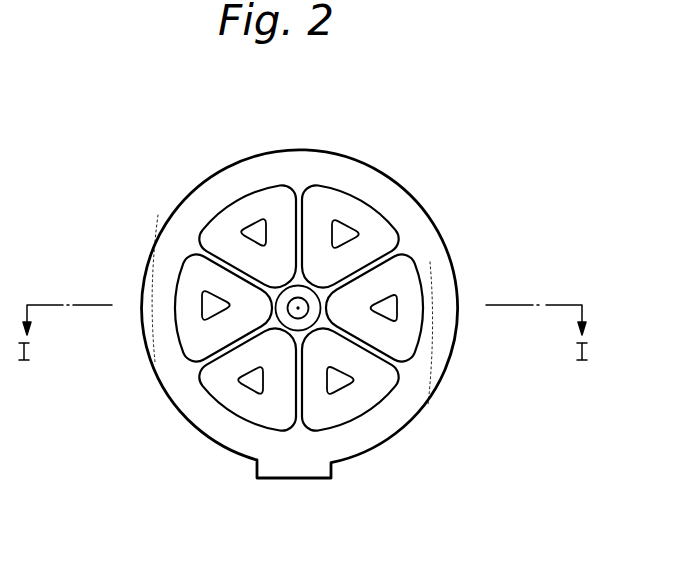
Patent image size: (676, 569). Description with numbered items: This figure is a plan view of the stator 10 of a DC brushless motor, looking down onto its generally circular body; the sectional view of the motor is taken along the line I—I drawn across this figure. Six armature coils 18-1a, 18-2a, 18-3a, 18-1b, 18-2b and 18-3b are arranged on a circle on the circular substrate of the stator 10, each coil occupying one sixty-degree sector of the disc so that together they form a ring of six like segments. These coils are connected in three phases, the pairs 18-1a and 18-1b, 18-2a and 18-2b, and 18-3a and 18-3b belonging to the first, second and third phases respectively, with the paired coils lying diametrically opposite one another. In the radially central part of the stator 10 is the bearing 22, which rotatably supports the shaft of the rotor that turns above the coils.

The stator 10 is at (442, 226).
The bearing 22 is at (306, 277).
The armature coil 18-1a is at (368, 218).
The armature coil 18-1b is at (228, 390).
The armature coil 18-2a is at (413, 283).
The armature coil 18-2b is at (185, 273).
The armature coil 18-3a is at (385, 382).
The armature coil 18-3b is at (223, 218).